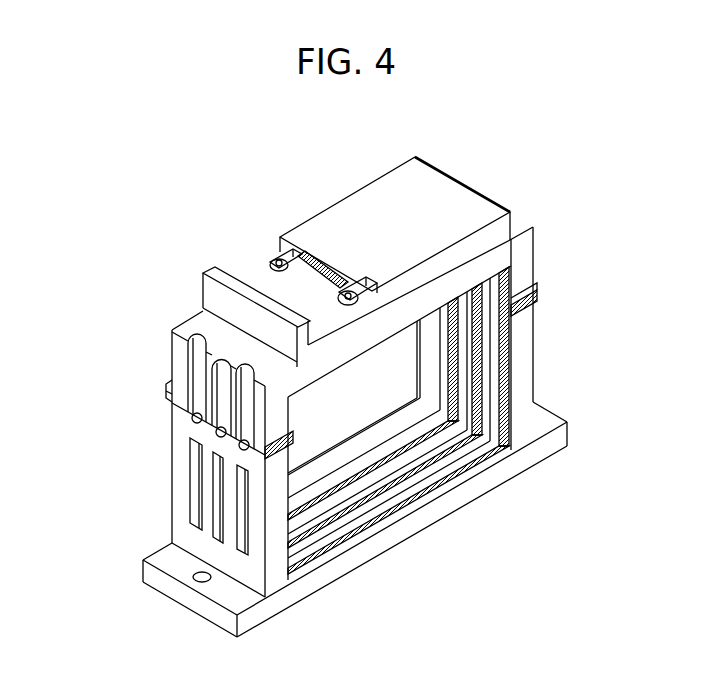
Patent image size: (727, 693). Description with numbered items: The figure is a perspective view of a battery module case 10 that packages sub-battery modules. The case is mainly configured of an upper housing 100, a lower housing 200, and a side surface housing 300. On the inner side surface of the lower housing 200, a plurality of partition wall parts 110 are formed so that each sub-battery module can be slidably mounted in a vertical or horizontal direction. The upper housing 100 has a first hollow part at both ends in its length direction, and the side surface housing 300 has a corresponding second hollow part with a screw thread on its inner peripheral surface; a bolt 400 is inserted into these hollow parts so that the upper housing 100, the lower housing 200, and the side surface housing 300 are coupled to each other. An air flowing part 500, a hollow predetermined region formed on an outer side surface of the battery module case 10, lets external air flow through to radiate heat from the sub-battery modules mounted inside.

The battery module case 10 is at (156, 203).
The upper housing 100 is at (370, 203).
The partition wall parts 110 is at (440, 480).
The lower housing 200 is at (170, 468).
The side surface housing 300 is at (533, 362).
The bolt 400 is at (172, 381).
The air flowing part 500 is at (214, 512).